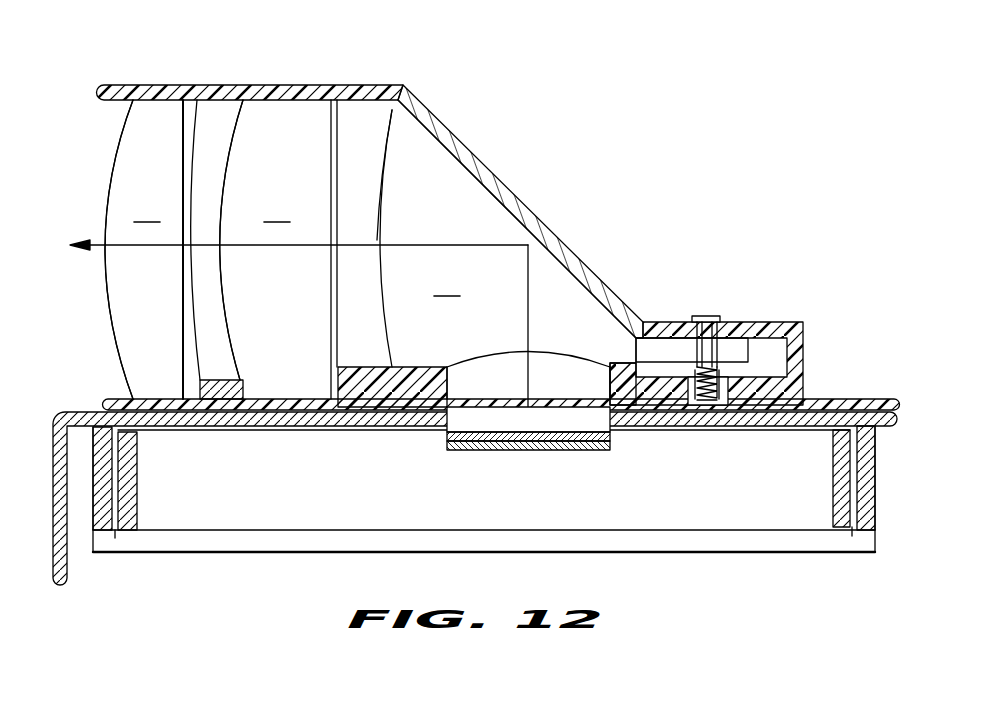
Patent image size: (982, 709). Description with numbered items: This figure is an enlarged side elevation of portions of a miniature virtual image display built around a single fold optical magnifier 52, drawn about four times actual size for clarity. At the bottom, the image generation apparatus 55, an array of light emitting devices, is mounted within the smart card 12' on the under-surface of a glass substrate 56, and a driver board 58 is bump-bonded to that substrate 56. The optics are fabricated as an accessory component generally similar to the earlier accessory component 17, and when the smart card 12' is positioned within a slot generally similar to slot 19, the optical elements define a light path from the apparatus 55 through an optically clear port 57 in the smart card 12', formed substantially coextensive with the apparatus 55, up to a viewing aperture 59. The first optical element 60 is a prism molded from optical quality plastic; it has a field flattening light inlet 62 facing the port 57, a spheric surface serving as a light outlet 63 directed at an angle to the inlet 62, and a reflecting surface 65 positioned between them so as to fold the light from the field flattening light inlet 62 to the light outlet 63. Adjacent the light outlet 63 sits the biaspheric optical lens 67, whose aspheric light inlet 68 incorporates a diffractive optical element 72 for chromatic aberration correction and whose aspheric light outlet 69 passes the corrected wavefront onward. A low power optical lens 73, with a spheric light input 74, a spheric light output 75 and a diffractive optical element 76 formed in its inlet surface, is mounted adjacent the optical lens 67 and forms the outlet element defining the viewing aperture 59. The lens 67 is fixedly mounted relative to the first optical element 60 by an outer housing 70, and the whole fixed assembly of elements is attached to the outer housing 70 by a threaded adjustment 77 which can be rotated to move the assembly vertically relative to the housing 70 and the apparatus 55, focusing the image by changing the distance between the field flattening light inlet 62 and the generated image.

The smart card 12' is at (487, 473).
The accessory component 17 is at (420, 244).
The slot 19 is at (90, 404).
The single fold optical magnifier 52 is at (450, 243).
The image generation apparatus 55 is at (513, 452).
The glass substrate 56 is at (260, 431).
The optically clear port 57 is at (494, 409).
The driver board 58 is at (371, 529).
The viewing aperture 59 is at (242, 253).
The first optical element 60 is at (402, 238).
The field flattening light inlet 62 is at (574, 358).
The light outlet 63 is at (385, 146).
The reflecting surface 65 is at (486, 206).
The optical lens 67 is at (256, 240).
The light inlet 68 is at (344, 186).
The light outlet 69 is at (226, 150).
The outer housing 70 is at (432, 121).
The diffractive optical element 72 is at (333, 328).
The low power optical lens 73 is at (133, 249).
The light input 74 is at (200, 274).
The light output 75 is at (110, 194).
The diffractive optical element 76 is at (184, 355).
The threaded adjustment 77 is at (704, 316).